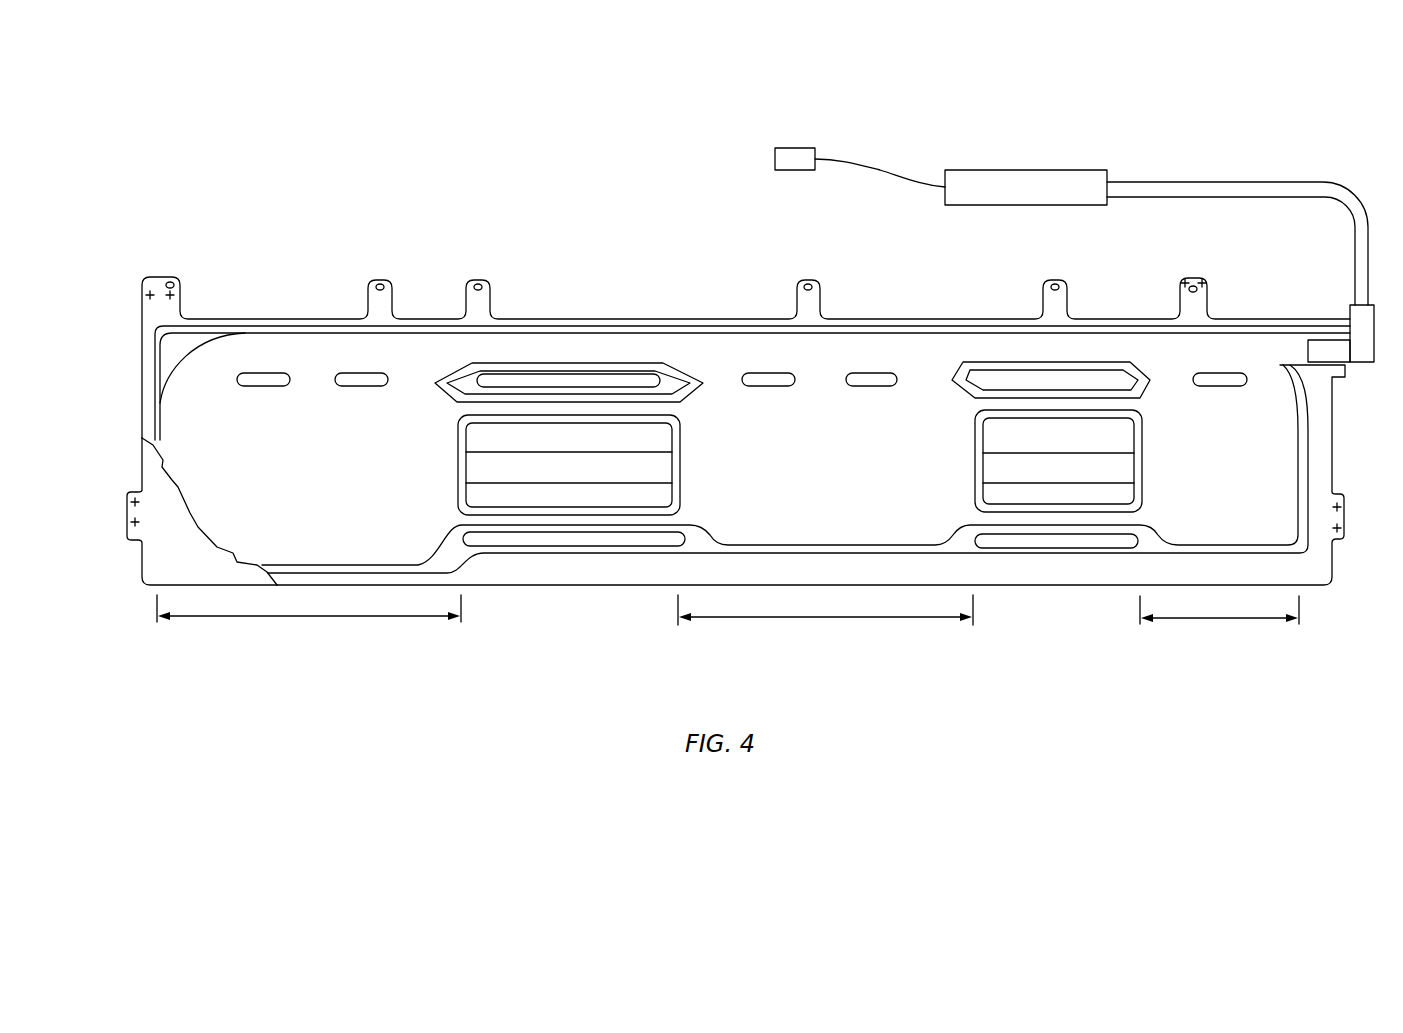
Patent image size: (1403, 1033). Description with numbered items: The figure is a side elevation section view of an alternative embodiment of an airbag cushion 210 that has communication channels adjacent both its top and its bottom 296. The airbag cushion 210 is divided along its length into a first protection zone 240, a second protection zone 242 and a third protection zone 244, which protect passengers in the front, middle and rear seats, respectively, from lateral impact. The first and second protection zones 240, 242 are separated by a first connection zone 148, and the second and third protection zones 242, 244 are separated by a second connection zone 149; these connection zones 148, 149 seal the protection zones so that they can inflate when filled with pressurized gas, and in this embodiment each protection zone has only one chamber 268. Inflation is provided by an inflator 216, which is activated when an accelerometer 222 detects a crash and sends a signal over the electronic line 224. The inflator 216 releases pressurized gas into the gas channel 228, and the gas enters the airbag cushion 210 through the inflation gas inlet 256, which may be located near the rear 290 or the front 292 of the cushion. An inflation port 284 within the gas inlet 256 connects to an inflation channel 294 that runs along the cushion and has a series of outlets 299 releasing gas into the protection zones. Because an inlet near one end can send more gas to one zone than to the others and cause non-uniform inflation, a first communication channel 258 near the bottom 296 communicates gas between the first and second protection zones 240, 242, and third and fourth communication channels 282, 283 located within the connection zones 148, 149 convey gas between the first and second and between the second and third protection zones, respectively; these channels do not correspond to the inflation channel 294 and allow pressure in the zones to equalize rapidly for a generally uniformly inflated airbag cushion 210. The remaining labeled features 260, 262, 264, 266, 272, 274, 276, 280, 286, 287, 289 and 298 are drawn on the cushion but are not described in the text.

The first connection zone 148 is at (569, 465).
The second connection zone 149 is at (1058, 461).
The airbag cushion 210 is at (541, 655).
The inflator 216 is at (1020, 182).
The accelerometer 222 is at (796, 153).
The electronic line 224 is at (877, 166).
The gas channel 228 is at (1210, 182).
The first protection zone 240 is at (328, 606).
The second protection zone 242 is at (798, 606).
The third protection zone 244 is at (1183, 608).
The inflation gas inlet 256 is at (1336, 314).
The first communication channel 258 is at (641, 526).
The recess 260 is at (288, 350).
The bottom wall 262 is at (190, 573).
The corner wall 264 is at (218, 318).
The plate surface 266 is at (744, 502).
The chamber 268 is at (744, 467).
The first edge 272 is at (245, 618).
The second edge 274 is at (845, 622).
The third edge 276 is at (1223, 620).
The inlet block 280 is at (1355, 308).
The third communication channel 282 is at (532, 406).
The fourth communication channel 283 is at (1028, 403).
The inflation port 284 is at (1308, 344).
The mounting tab 286 is at (155, 278).
The tab edge 287 is at (820, 290).
The mounting hole 289 is at (170, 283).
The rear 290 is at (130, 410).
The front 292 is at (1340, 416).
The inflation channel 294 is at (257, 347).
The bottom 296 is at (660, 326).
The bottom edge 298 is at (612, 586).
The outlets 299 is at (205, 390).